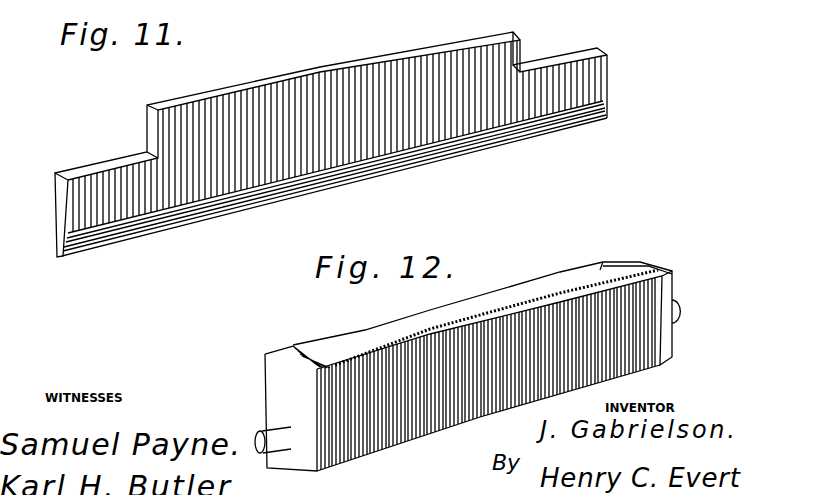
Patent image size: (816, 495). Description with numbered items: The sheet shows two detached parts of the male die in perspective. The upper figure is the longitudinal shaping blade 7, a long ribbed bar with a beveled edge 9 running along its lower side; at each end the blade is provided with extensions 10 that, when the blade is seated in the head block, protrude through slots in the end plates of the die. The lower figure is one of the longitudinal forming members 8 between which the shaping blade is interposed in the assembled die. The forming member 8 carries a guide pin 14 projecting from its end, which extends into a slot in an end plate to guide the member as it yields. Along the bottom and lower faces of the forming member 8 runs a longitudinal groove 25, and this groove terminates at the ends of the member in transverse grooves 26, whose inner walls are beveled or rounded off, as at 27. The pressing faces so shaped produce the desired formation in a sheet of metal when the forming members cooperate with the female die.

In FIG. 11, the shaping blade 7 is at (387, 142).
In FIG. 11, the beveled edge 9 is at (458, 148).
In FIG. 11, the extensions 10 is at (88, 187).
In FIG. 12, the forming member 8 is at (484, 418).
In FIG. 12, the guide pin 14 is at (283, 430).
In FIG. 12, the longitudinal groove 25 is at (496, 312).
In FIG. 12, the transverse groove 26 is at (603, 262).
In FIG. 12, the beveled inner wall 27 is at (310, 350).